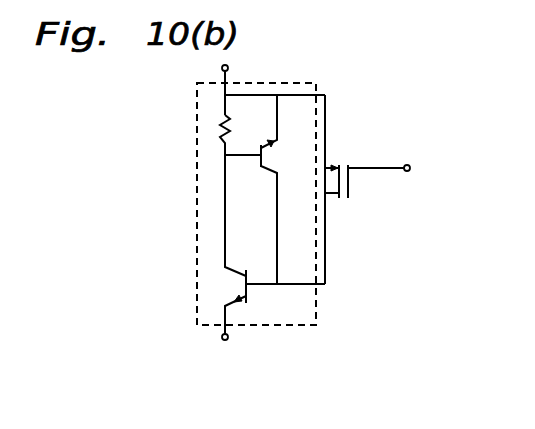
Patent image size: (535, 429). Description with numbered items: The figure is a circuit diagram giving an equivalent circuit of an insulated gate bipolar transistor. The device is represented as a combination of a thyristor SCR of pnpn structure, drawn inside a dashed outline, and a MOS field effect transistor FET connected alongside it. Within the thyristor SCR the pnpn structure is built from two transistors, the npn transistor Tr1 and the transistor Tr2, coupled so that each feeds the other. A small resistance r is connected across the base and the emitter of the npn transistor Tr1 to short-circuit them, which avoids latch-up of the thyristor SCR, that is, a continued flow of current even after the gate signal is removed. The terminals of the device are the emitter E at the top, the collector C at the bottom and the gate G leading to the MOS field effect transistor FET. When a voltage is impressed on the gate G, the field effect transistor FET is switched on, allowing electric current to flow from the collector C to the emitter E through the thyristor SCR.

The emitter E is at (229, 65).
The small resistance r is at (232, 133).
The thyristor SCR is at (197, 140).
The npn transistor Tr1 is at (268, 170).
The transistor Tr2 is at (253, 291).
The MOS field effect transistor FET is at (342, 165).
The gate G is at (405, 172).
The collector C is at (222, 340).